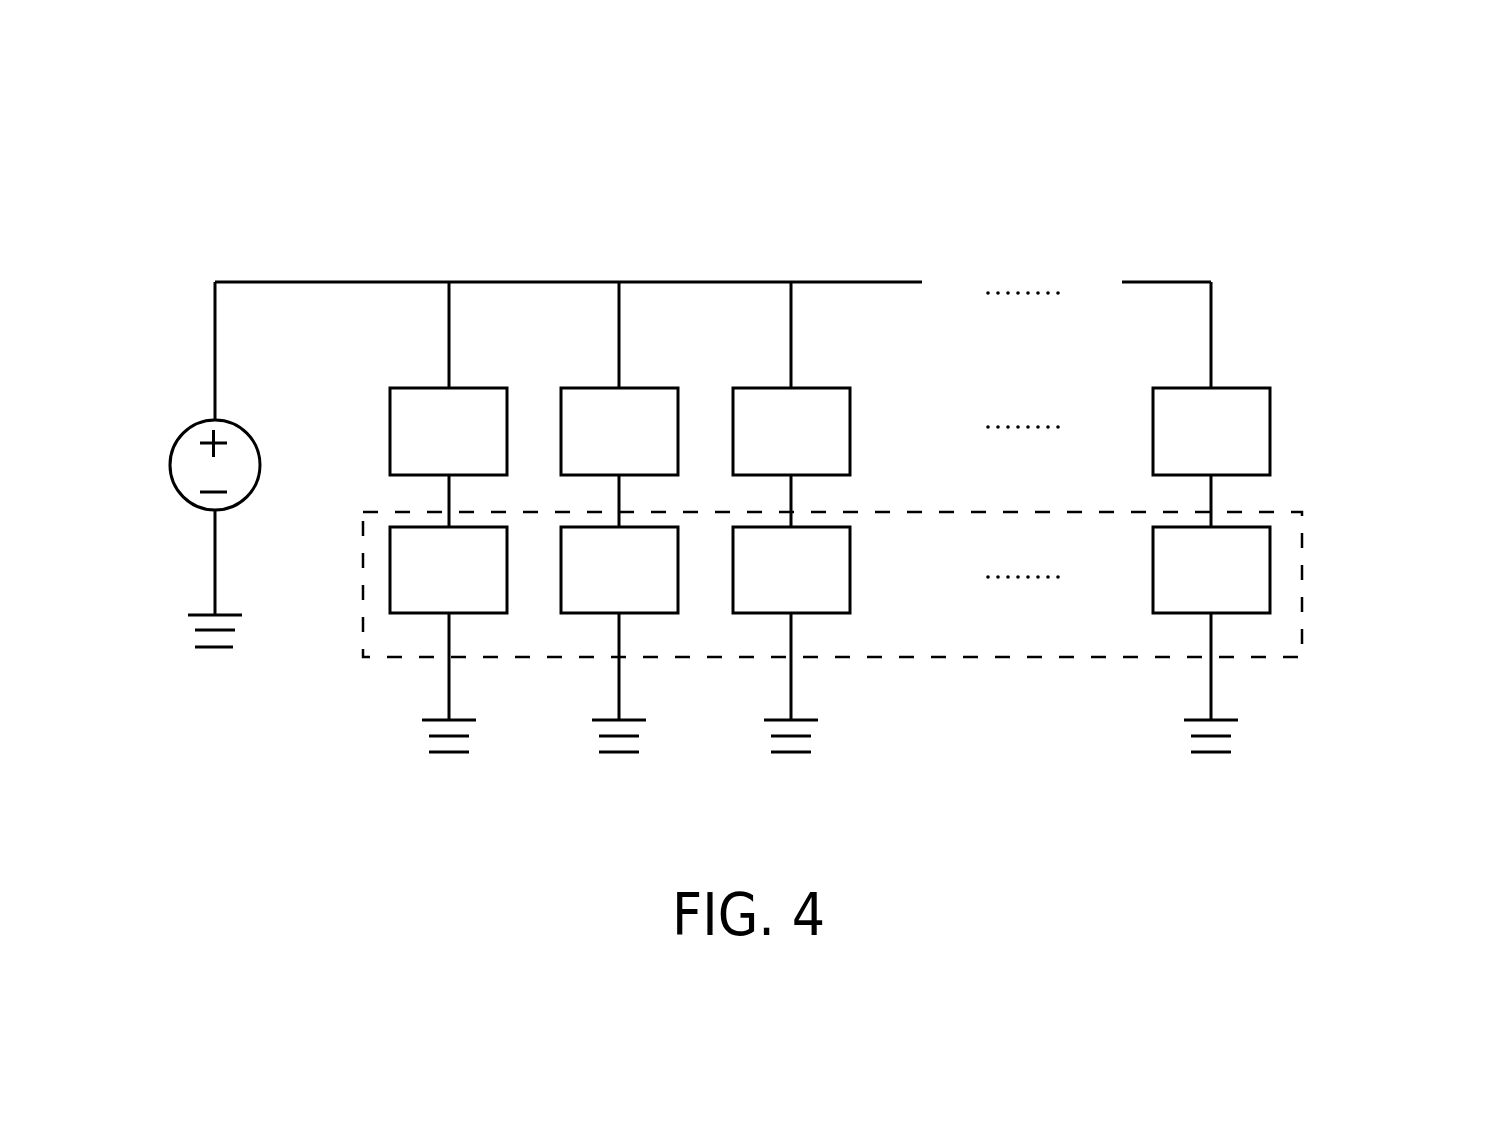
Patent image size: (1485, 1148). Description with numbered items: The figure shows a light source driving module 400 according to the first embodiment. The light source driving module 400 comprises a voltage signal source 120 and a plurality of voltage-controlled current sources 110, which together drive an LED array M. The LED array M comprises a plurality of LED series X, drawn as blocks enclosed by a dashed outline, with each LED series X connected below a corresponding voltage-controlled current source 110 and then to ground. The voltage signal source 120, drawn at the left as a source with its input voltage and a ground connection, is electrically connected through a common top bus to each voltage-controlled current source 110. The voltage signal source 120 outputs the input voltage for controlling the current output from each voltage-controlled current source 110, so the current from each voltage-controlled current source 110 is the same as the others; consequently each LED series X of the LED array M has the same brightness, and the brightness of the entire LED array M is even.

The light source driving module 400 is at (790, 406).
The voltage-controlled current source 110 is at (477, 452).
The voltage signal source 120 is at (190, 418).
The LED array M is at (1302, 584).